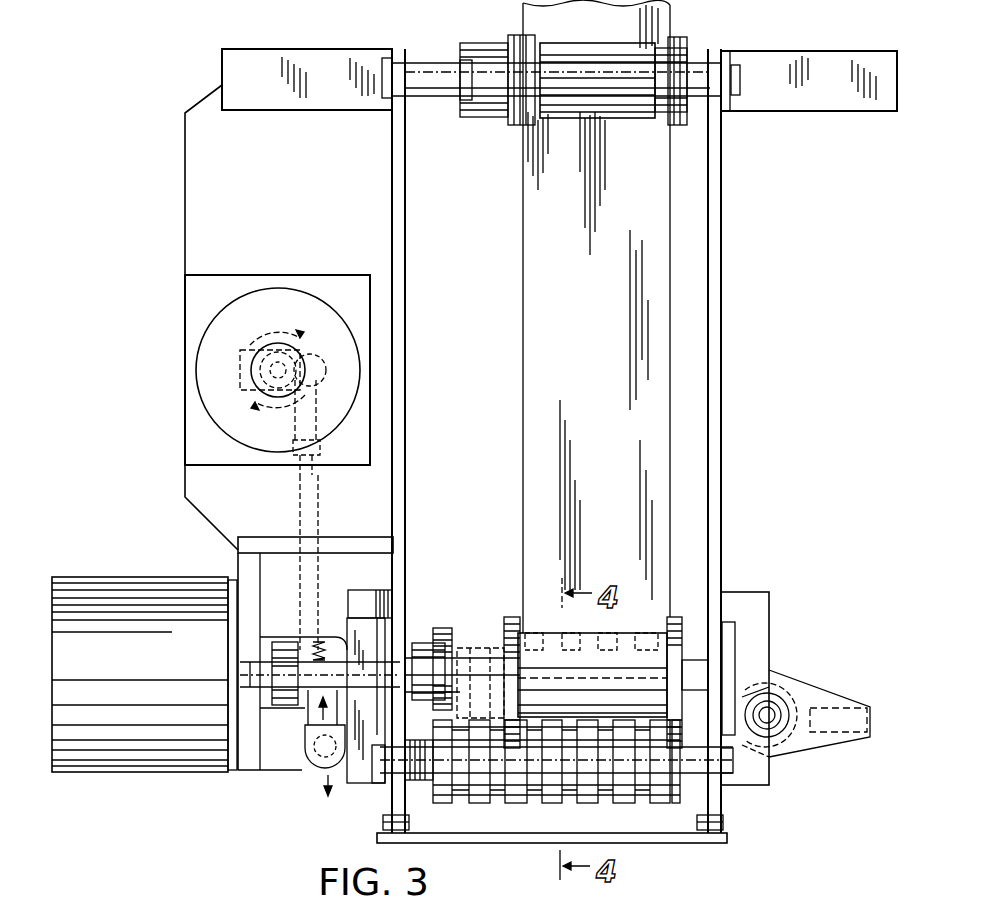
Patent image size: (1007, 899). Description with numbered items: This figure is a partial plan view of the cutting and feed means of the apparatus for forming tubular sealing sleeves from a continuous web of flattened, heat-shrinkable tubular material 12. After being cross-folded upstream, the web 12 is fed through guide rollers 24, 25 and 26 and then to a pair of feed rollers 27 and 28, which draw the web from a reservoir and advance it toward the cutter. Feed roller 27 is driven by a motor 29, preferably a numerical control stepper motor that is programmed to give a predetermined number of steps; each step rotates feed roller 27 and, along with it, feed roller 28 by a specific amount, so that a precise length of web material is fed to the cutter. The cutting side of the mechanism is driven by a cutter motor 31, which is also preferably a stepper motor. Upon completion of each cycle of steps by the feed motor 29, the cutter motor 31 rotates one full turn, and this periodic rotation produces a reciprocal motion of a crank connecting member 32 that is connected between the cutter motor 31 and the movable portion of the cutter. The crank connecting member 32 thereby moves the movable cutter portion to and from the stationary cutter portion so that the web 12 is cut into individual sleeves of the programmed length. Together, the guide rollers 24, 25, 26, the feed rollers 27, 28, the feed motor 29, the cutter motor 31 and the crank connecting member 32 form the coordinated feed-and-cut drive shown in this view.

The web of heat-shrinkable tubular material 12 is at (604, 366).
The guide roller 24 is at (648, 55).
The guide roller 25 is at (528, 45).
The guide roller 26 is at (680, 612).
The feed roller 27 is at (488, 648).
The feed roller 28 is at (680, 795).
The motor 29 is at (150, 556).
The cutter motor 31 is at (210, 368).
The crank connecting member 32 is at (300, 490).